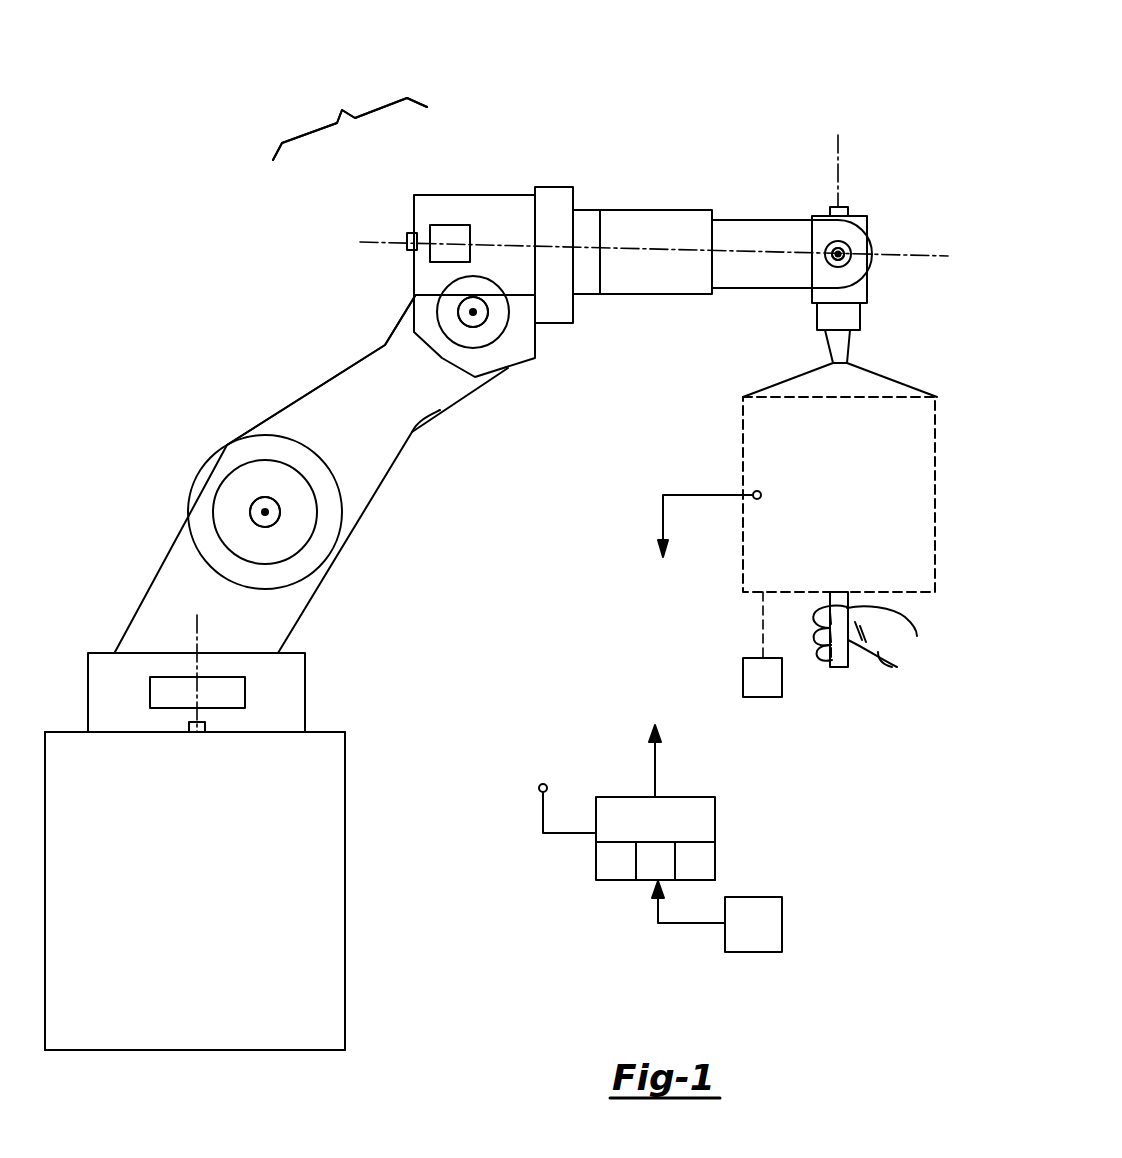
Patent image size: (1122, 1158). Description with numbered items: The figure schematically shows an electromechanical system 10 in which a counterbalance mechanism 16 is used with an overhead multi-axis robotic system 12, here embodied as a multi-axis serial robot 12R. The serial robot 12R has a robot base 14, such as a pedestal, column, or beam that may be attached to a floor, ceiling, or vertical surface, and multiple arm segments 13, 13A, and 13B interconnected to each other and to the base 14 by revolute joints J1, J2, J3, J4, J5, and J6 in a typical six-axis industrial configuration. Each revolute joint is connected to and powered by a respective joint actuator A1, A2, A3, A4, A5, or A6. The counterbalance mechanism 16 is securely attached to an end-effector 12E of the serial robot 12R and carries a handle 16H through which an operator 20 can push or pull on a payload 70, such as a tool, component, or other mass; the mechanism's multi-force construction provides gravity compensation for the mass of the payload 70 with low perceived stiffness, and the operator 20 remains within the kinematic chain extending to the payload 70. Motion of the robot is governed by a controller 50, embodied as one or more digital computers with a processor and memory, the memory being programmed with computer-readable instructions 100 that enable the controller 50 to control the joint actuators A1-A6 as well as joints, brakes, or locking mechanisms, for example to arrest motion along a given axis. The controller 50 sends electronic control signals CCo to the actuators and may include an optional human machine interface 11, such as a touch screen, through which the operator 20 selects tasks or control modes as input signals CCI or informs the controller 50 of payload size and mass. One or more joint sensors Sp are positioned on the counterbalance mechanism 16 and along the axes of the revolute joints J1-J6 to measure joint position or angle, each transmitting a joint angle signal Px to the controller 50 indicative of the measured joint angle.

The electromechanical system 10 is at (892, 115).
The human machine interface 11 is at (782, 922).
The multi-axis robotic system 12 is at (350, 121).
The multi-axis serial robot 12R is at (685, 58).
The end-effector 12E is at (870, 350).
The arm segment 13 is at (172, 582).
The arm segment 13A is at (355, 413).
The arm segment 13B is at (658, 228).
The robot base 14 is at (183, 891).
The counterbalance mechanism 16 is at (743, 437).
The handle 16H is at (838, 670).
The operator 20 is at (873, 628).
The controller 50 is at (715, 835).
The payload 70 is at (762, 644).
The computer-readable instructions 100 is at (684, 879).
The revolute joint J1 is at (265, 512).
The revolute joint J2 is at (473, 312).
The revolute joint J3 is at (838, 254).
The revolute joint J4 is at (377, 237).
The revolute joint J5 is at (840, 162).
The revolute joint J6 is at (190, 635).
The joint actuator A1 is at (280, 509).
The joint actuator A2 is at (473, 312).
The joint actuator A3 is at (832, 253).
The joint actuator A4 is at (452, 225).
The joint actuator A5 is at (860, 218).
The joint actuator A6 is at (150, 693).
The joint sensor Sp is at (412, 233).
The joint angle signal Px is at (648, 683).
The electronic control signals CCo is at (678, 761).
The input signals CCI is at (688, 920).